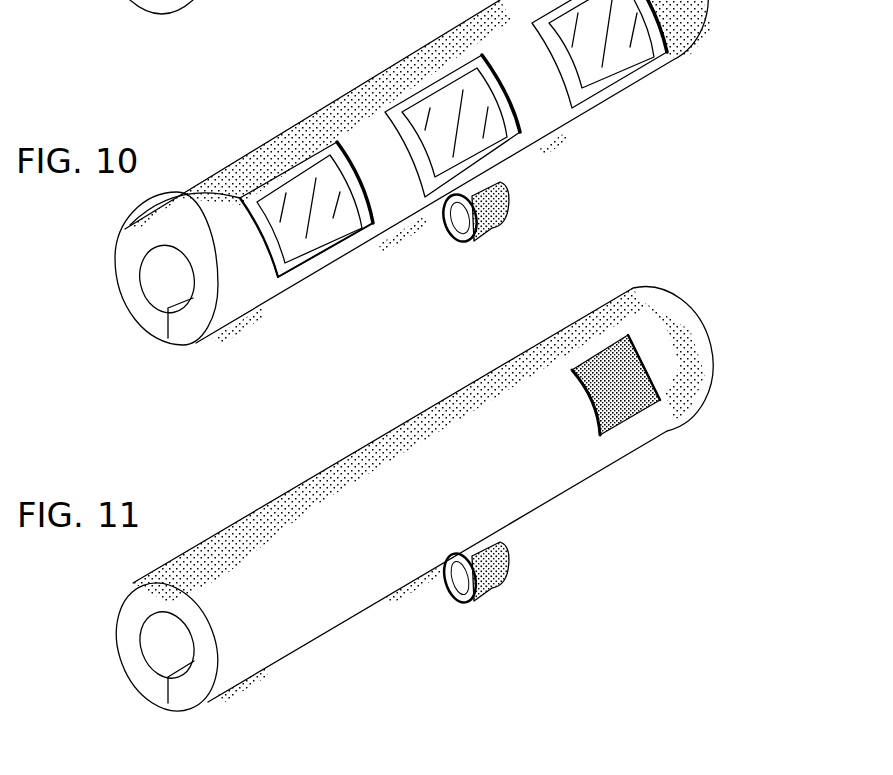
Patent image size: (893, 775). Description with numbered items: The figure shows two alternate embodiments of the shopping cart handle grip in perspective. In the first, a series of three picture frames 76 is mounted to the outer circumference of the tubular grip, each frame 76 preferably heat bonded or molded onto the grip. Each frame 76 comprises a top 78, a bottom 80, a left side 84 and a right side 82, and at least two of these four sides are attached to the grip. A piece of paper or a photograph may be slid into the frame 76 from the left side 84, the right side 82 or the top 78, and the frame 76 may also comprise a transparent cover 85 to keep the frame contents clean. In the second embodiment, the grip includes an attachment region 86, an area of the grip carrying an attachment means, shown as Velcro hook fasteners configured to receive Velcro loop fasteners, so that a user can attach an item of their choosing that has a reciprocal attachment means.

In FIG. 10, the picture frame 76 is at (125, 229).
In FIG. 10, the top 78 is at (304, 162).
In FIG. 10, the bottom 80 is at (318, 253).
In FIG. 10, the right side 82 is at (348, 165).
In FIG. 10, the left side 84 is at (278, 246).
In FIG. 10, the transparent cover 85 is at (333, 218).
In FIG. 11, the attachment region 86 is at (634, 403).